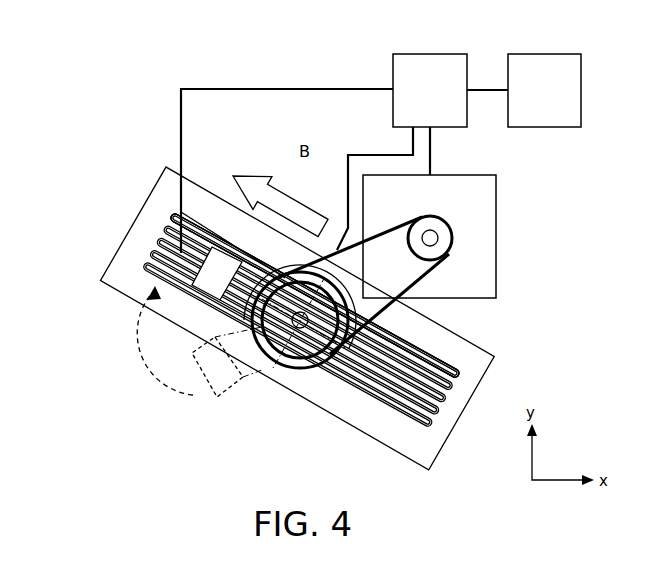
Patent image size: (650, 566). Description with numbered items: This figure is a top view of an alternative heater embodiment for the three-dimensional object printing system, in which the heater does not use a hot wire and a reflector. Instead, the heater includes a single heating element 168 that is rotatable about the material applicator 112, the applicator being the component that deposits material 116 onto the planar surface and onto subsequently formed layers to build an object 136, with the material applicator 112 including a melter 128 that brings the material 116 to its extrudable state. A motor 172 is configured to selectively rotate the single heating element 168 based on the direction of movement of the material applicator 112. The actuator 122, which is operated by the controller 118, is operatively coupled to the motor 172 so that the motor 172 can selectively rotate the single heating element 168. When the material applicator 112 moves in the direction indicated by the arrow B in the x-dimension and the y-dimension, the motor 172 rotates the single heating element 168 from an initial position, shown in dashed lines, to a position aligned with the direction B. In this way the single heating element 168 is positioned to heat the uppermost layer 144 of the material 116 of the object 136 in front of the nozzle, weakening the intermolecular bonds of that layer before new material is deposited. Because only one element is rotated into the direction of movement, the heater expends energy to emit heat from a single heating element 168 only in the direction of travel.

The material applicator 112 is at (316, 381).
The material 116 is at (433, 362).
The controller 118 is at (545, 52).
The actuator 122 is at (430, 52).
The melter 128 is at (240, 388).
The object 136 is at (449, 366).
The uppermost layer 144 is at (423, 352).
The single heating element 168 is at (213, 247).
The motor 172 is at (462, 175).